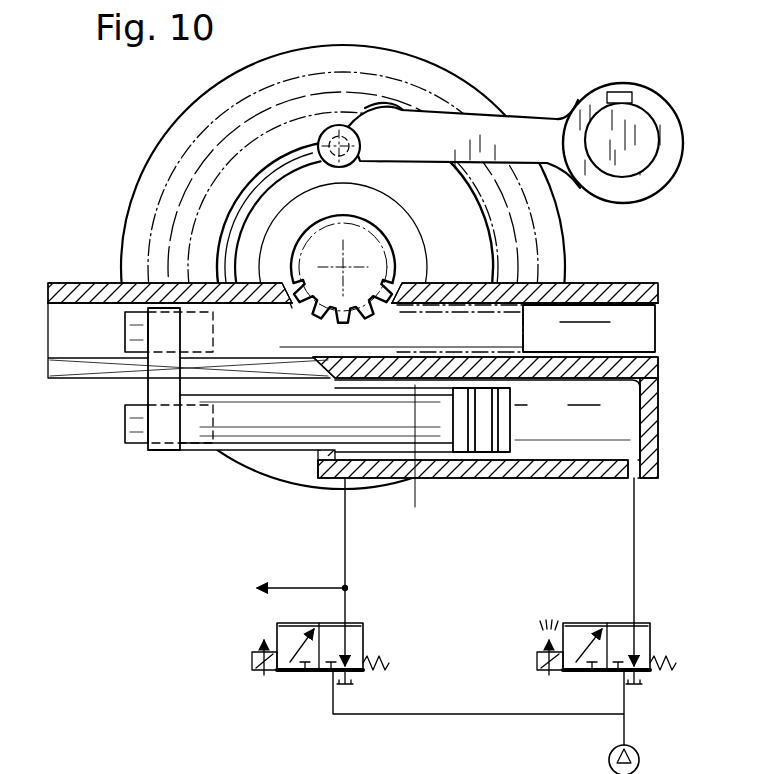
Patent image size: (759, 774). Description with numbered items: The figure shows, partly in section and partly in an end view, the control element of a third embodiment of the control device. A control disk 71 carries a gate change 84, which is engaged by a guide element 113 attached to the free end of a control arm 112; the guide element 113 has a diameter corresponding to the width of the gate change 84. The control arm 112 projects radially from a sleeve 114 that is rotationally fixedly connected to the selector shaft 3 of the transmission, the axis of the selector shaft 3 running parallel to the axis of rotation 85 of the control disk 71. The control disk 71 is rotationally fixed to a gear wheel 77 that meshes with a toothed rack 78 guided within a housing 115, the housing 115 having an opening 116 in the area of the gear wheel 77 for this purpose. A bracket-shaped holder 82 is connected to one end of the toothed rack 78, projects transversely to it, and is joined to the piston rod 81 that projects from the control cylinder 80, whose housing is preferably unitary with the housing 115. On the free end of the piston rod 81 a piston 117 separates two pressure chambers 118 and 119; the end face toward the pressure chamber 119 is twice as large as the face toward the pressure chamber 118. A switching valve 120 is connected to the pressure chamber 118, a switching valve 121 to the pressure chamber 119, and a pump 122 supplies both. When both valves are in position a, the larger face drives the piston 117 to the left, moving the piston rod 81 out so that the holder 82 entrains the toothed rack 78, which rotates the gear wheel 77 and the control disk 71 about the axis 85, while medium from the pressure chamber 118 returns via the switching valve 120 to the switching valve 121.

The selector shaft 3 is at (635, 120).
The control disk 71 is at (152, 196).
The gear wheel 77 is at (313, 258).
The toothed rack 78 is at (270, 343).
The control cylinder 80 is at (612, 395).
The piston rod 81 is at (207, 440).
The bracket-shaped holder 82 is at (167, 390).
The gate change 84 is at (243, 200).
The axis of rotation 85 is at (343, 267).
The control arm 112 is at (427, 130).
The guide element 113 is at (378, 108).
The sleeve 114 is at (600, 182).
The housing 115 is at (658, 284).
The opening 116 is at (290, 307).
The piston 117 is at (483, 432).
The pressure chamber 118 is at (447, 452).
The pressure chamber 119 is at (560, 442).
The switching valve 120 is at (300, 672).
The switching valve 121 is at (604, 620).
The pump 122 is at (642, 756).